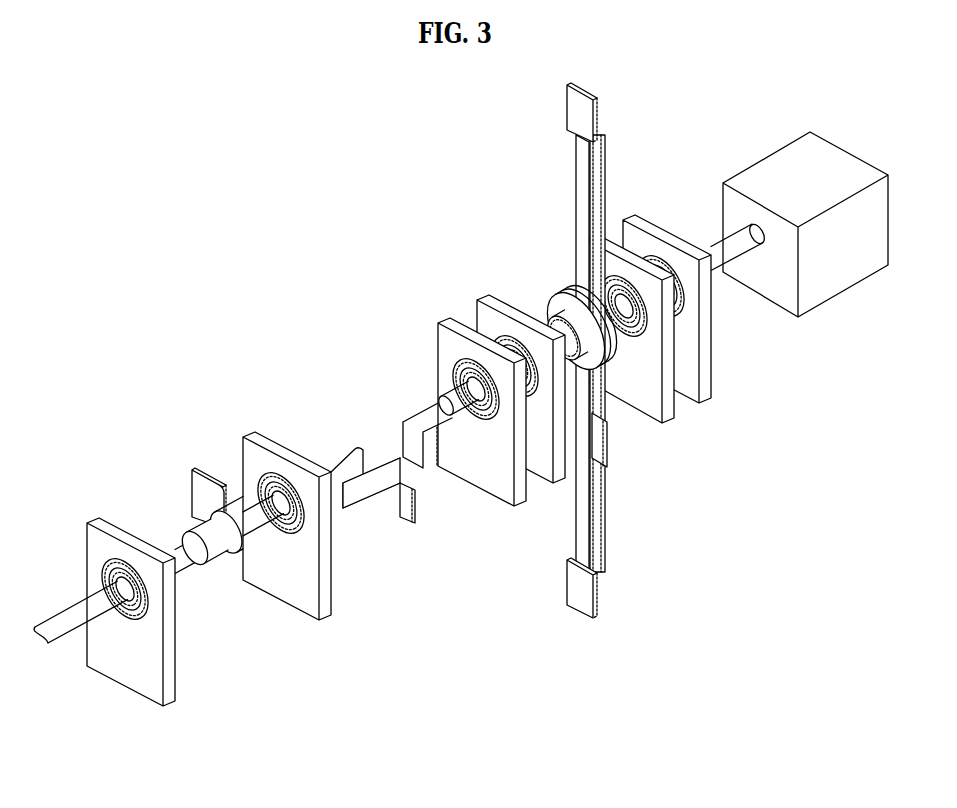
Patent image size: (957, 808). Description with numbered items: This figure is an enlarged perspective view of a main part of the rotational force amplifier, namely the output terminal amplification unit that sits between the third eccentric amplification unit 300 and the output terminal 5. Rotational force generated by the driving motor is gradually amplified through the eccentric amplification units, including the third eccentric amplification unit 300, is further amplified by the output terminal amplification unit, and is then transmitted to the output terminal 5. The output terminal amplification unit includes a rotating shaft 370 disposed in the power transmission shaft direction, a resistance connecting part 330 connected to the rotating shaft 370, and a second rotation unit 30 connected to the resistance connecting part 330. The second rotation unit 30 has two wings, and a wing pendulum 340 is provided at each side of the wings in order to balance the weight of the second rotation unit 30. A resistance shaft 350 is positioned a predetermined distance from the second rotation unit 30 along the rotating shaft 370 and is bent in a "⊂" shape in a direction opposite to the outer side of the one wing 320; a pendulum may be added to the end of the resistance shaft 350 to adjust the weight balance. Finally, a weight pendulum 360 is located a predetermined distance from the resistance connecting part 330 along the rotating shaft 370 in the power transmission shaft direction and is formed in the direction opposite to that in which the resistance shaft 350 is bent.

The output terminal 5 is at (853, 282).
The second rotation unit 30 is at (574, 620).
The third eccentric amplification unit 300 is at (732, 648).
The wing 320 is at (575, 182).
The resistance connecting part 330 is at (605, 155).
The wing pendulum 340 is at (607, 447).
The resistance shaft 350 is at (423, 468).
The weight pendulum 360 is at (205, 476).
The rotating shaft 370 is at (70, 633).